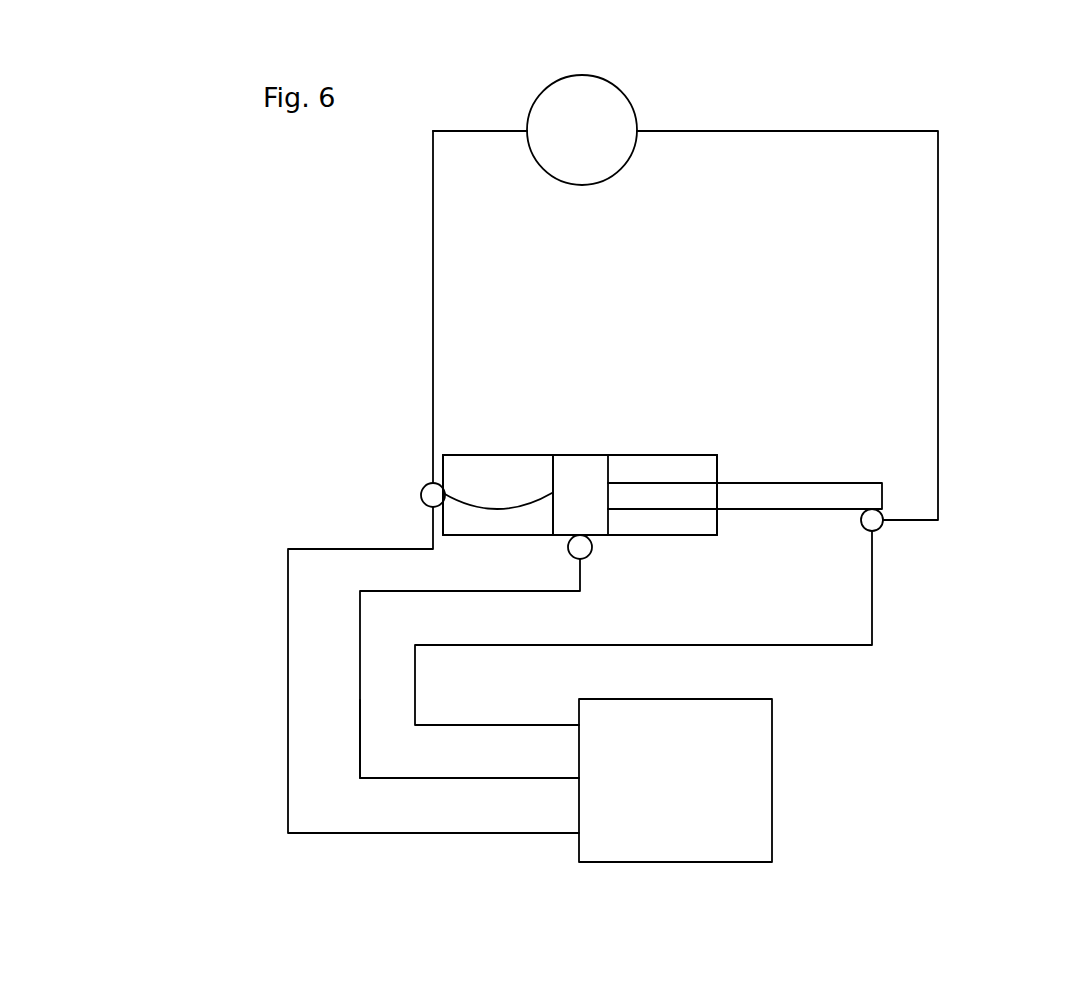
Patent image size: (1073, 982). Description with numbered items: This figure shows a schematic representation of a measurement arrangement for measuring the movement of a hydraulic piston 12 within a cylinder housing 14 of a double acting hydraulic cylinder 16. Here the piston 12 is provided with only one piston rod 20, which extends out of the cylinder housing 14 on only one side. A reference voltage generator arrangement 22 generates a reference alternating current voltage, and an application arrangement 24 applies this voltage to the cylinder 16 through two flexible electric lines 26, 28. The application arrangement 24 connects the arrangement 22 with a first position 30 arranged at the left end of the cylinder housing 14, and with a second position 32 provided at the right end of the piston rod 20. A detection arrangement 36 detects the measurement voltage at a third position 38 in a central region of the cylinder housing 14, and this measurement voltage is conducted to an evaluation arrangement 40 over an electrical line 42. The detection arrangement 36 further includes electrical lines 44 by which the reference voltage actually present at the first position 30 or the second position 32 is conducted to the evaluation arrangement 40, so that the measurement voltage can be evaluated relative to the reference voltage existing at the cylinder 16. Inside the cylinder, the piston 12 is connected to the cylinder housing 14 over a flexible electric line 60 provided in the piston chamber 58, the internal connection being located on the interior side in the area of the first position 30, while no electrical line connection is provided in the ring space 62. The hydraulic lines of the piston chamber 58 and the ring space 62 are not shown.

The piston 12 is at (643, 493).
The cylinder housing 14 is at (690, 455).
The cylinder 16 is at (527, 443).
The piston rod 20 is at (810, 483).
The reference voltage generator arrangement 22 is at (612, 78).
The application arrangement 24 is at (418, 288).
The electric line 26 is at (490, 130).
The electric line 28 is at (813, 131).
The first position 30 is at (426, 507).
The second position 32 is at (879, 529).
The detection arrangement 36 is at (292, 696).
The third position 38 is at (569, 552).
The evaluation arrangement 40 is at (690, 790).
The electrical line 42 is at (362, 740).
The electrical lines 44 is at (288, 628).
The piston chamber 58 is at (537, 490).
The electric line 60 is at (482, 510).
The ring space 62 is at (660, 465).